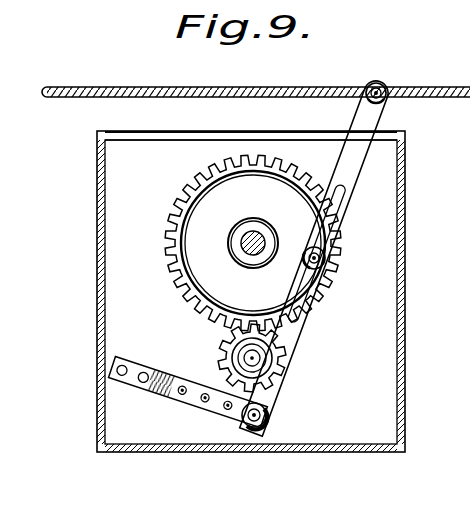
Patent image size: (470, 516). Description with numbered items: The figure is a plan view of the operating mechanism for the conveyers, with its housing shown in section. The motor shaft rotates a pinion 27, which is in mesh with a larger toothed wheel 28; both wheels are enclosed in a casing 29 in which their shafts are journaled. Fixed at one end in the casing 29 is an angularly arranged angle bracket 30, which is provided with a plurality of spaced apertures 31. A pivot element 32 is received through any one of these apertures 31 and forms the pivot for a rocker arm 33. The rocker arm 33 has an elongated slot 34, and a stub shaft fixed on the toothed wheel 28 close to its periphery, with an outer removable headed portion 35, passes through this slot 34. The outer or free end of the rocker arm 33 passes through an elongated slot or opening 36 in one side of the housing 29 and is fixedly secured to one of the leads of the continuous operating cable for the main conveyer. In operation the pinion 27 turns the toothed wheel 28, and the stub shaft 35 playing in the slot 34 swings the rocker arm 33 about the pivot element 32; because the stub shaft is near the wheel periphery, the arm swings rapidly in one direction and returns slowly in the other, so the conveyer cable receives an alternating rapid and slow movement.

The pinion 27 is at (226, 355).
The toothed wheel 28 is at (253, 243).
The casing 29 is at (405, 387).
The angle bracket 30 is at (163, 391).
The apertures 31 is at (184, 397).
The pivot element 32 is at (254, 429).
The rocker arm 33 is at (300, 336).
The elongated slot 34 is at (304, 293).
The stub shaft headed portion 35 is at (336, 247).
The elongated slot or opening 36 is at (198, 134).